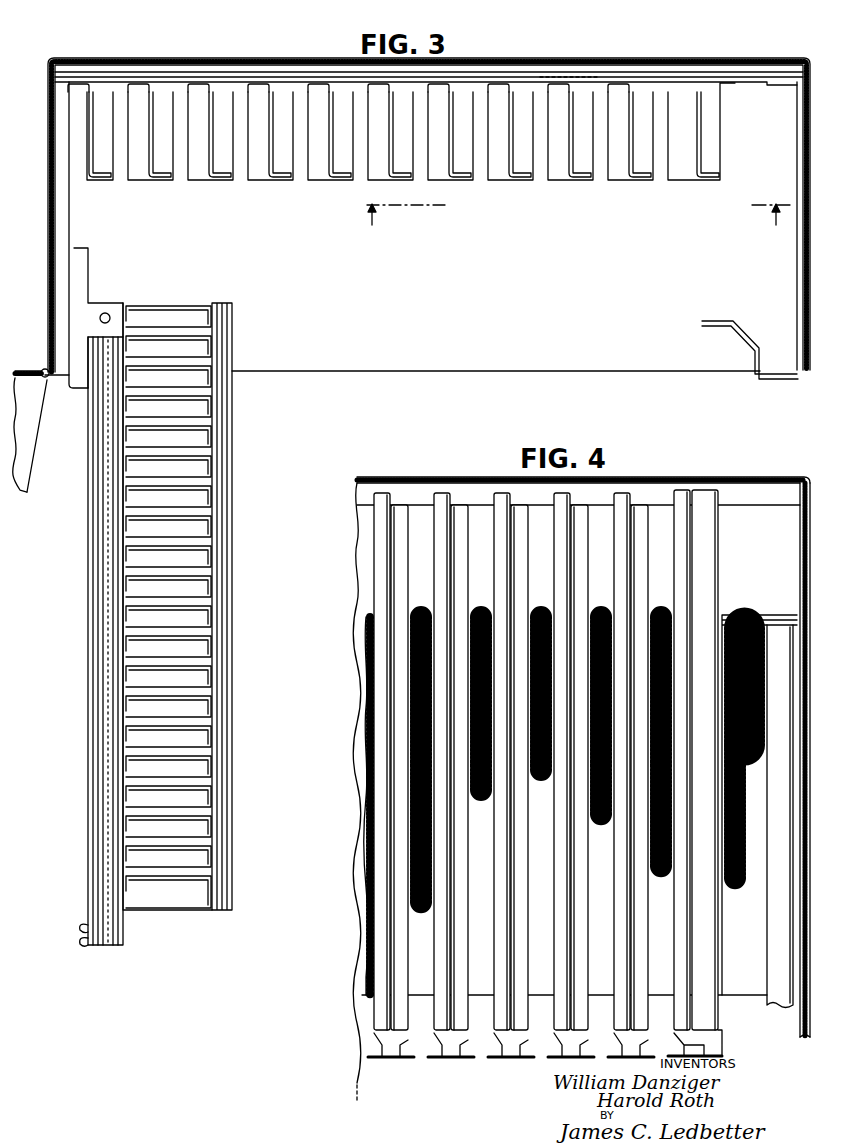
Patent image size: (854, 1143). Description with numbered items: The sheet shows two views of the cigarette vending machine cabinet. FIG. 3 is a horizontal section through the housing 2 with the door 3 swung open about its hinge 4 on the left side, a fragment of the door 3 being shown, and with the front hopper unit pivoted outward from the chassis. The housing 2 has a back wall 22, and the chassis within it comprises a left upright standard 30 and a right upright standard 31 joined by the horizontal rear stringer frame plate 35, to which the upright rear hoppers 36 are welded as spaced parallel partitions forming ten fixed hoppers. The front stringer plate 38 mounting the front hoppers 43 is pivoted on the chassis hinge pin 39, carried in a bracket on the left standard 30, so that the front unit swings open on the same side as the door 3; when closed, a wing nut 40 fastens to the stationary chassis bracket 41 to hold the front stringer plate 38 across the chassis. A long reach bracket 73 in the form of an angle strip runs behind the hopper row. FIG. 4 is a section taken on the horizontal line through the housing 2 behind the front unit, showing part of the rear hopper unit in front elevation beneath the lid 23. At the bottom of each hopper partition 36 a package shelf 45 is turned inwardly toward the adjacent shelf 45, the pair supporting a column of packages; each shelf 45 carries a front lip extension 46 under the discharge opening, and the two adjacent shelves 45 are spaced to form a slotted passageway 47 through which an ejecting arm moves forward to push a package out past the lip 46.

In FIG. 3, the housing 2 is at (51, 58).
In FIG. 4, the housing 2 is at (352, 960).
In FIG. 3, the door 3 is at (39, 460).
In FIG. 3, the door hinge 4 is at (35, 355).
In FIG. 3, the back wall 22 is at (540, 62).
In FIG. 4, the back wall 22 is at (360, 556).
In FIG. 4, the lid 23 is at (367, 478).
In FIG. 3, the left upright standard 30 is at (70, 207).
In FIG. 3, the right upright standard 31 is at (797, 273).
In FIG. 4, the right upright standard 31 is at (795, 987).
In FIG. 3, the rear stringer frame plate 35 is at (175, 75).
In FIG. 4, the rear stringer frame plate 35 is at (742, 635).
In FIG. 3, the rear hoppers 36 is at (308, 106).
In FIG. 4, the rear hoppers 36 is at (516, 783).
In FIG. 3, the front stringer plate 38 is at (105, 640).
In FIG. 3, the chassis hinge pin 39 is at (108, 313).
In FIG. 3, the wing nut 40 is at (82, 925).
In FIG. 3, the chassis bracket 41 is at (716, 325).
In FIG. 3, the front hoppers 43 is at (200, 604).
In FIG. 4, the package shelf 45 is at (490, 1062).
In FIG. 3, the front lip extension 46 is at (270, 180).
In FIG. 4, the slotted passageway 47 is at (413, 1060).
In FIG. 3, the long reach bracket 73 is at (228, 495).